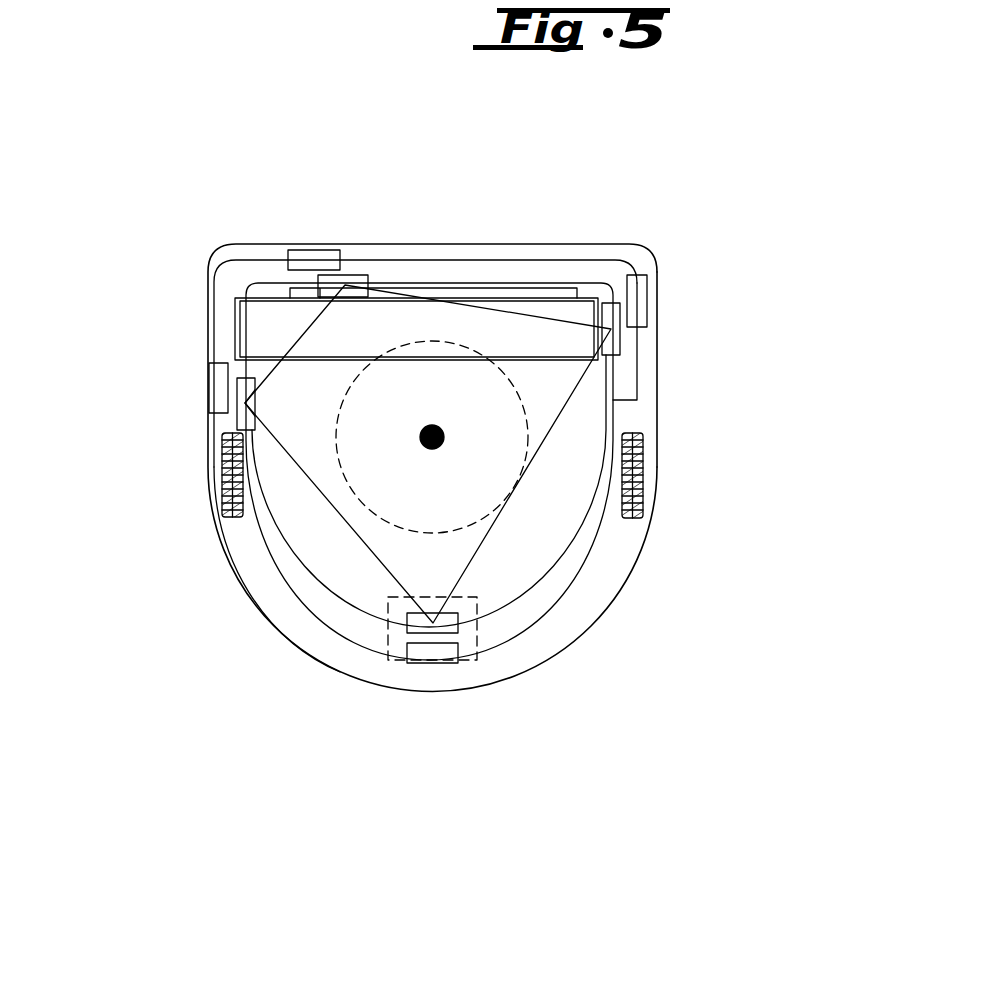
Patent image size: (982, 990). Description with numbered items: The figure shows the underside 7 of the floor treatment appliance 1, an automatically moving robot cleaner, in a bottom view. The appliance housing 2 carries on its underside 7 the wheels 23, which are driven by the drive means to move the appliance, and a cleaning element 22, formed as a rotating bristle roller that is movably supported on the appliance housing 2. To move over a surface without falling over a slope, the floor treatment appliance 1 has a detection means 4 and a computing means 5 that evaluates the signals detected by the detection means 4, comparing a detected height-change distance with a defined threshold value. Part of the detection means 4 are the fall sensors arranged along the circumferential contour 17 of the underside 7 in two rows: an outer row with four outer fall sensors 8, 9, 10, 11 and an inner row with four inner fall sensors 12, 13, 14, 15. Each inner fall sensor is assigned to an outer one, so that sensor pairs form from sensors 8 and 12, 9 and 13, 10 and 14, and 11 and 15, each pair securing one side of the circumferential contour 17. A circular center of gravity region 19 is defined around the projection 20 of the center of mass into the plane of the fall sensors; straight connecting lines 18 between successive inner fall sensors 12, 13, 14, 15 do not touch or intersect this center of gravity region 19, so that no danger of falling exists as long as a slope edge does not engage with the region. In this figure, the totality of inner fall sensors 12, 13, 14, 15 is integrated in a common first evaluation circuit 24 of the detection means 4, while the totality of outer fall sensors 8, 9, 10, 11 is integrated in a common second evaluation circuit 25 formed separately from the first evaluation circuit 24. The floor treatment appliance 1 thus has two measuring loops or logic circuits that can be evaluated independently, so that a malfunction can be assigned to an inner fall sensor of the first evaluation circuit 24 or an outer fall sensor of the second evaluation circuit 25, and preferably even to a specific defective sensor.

The floor treatment appliance 1 is at (630, 691).
The appliance housing 2 is at (665, 538).
The detection means 4 is at (196, 338).
The computing means 5 is at (482, 640).
The underside 7 is at (647, 380).
The outer fall sensor 8 is at (313, 258).
The outer fall sensor 9 is at (638, 290).
The outer fall sensor 10 is at (441, 655).
The outer fall sensor 11 is at (215, 390).
The inner fall sensor 12 is at (355, 285).
The inner fall sensor 13 is at (614, 338).
The inner fall sensor 14 is at (413, 623).
The inner fall sensor 15 is at (242, 420).
The circumferential contour 17 is at (658, 420).
The straight connecting lines 18 is at (305, 330).
The center of gravity region 19 is at (367, 452).
The projection 20 is at (429, 446).
The cleaning element 22 is at (556, 312).
The wheels 23 is at (222, 488).
The first evaluation circuit 24 is at (582, 543).
The second evaluation circuit 25 is at (553, 608).